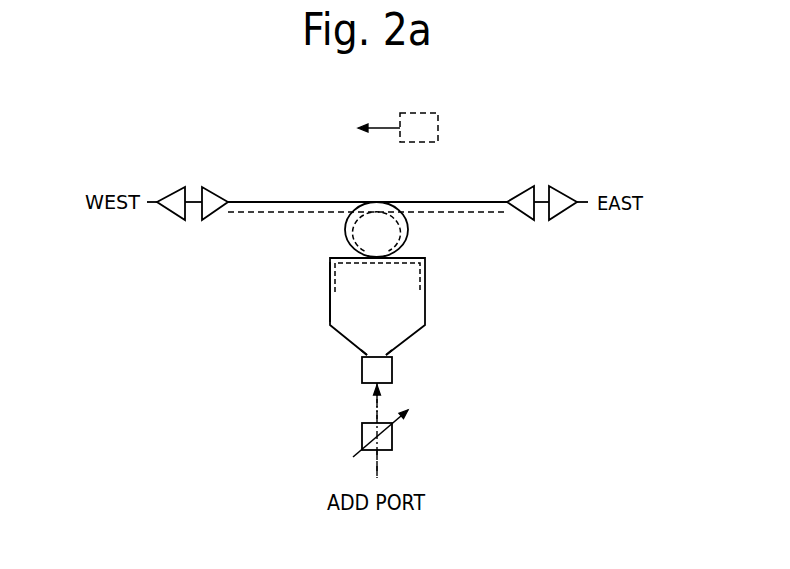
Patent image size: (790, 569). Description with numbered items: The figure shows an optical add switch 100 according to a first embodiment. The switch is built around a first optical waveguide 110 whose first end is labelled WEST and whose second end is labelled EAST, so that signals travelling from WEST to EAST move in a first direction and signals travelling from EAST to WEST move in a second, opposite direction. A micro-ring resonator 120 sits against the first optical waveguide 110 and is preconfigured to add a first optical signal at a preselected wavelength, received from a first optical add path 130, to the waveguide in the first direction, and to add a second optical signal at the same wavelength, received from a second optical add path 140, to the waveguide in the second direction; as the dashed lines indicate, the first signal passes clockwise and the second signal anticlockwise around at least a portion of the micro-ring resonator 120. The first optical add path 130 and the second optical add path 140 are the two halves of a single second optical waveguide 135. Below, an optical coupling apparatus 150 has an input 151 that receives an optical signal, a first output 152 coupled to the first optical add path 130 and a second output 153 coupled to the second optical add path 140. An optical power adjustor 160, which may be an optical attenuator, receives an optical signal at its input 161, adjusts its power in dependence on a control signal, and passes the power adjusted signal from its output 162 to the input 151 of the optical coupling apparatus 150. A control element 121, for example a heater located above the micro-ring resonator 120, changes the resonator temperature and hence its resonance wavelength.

The optical add switch 100 is at (538, 343).
The first optical waveguide 110 is at (465, 202).
The micro-ring resonator 120 is at (345, 227).
The control element 121 is at (418, 113).
The first optical add path 130 is at (377, 303).
The second optical waveguide 135 is at (421, 277).
The second optical add path 140 is at (332, 285).
The optical coupling apparatus 150 is at (362, 372).
The input 151 is at (382, 384).
The first output 152 is at (391, 350).
The second output 153 is at (361, 350).
The optical power adjustor 160 is at (392, 435).
The input 161 is at (378, 453).
The output 162 is at (374, 412).